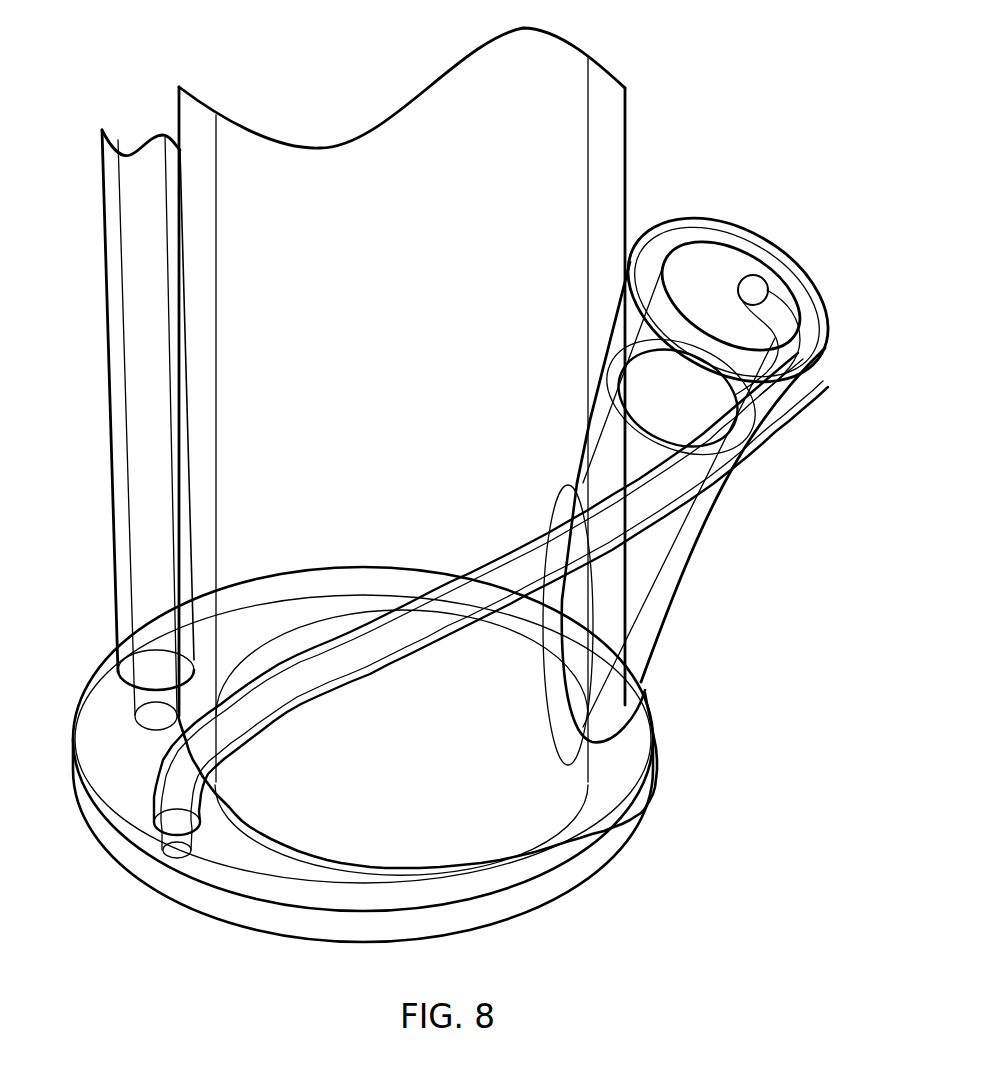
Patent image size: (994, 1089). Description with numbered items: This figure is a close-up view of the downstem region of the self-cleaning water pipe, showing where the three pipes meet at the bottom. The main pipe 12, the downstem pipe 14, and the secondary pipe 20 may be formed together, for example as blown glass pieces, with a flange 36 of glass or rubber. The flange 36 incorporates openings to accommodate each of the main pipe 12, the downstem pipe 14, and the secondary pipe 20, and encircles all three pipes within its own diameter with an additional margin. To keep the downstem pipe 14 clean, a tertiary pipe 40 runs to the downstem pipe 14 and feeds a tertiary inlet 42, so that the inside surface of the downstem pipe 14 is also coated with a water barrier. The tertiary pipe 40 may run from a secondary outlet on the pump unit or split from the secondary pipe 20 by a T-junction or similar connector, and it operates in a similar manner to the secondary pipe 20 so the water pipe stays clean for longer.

The main pipe 12 is at (646, 104).
The downstem pipe 14 is at (688, 567).
The secondary pipe 20 is at (106, 372).
The flange 36 is at (187, 902).
The tertiary pipe 40 is at (506, 562).
The tertiary inlet 42 is at (757, 288).